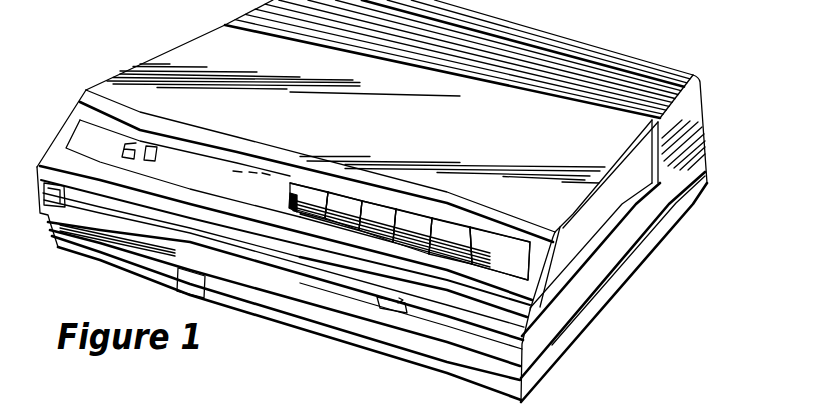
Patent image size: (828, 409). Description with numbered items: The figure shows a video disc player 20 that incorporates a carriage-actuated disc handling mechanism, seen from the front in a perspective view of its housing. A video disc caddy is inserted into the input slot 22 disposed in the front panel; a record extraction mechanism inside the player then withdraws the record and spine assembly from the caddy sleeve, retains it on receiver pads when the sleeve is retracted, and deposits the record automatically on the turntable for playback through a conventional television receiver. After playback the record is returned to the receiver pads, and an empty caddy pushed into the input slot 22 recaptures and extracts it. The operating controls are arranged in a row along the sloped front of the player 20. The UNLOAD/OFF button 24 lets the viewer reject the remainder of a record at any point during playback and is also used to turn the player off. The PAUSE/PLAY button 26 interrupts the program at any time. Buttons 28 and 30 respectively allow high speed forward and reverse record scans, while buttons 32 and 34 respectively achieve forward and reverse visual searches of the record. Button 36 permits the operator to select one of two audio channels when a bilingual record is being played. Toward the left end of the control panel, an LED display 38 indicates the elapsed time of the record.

The video disc player 20 is at (372, 201).
The input slot 22 is at (147, 218).
The UNLOAD/OFF button 24 is at (453, 240).
The PAUSE/PLAY button 26 is at (428, 246).
The button 28 is at (410, 229).
The button 30 is at (376, 221).
The button 32 is at (342, 213).
The button 34 is at (308, 205).
The button 36 is at (317, 188).
The LED display 38 is at (123, 147).